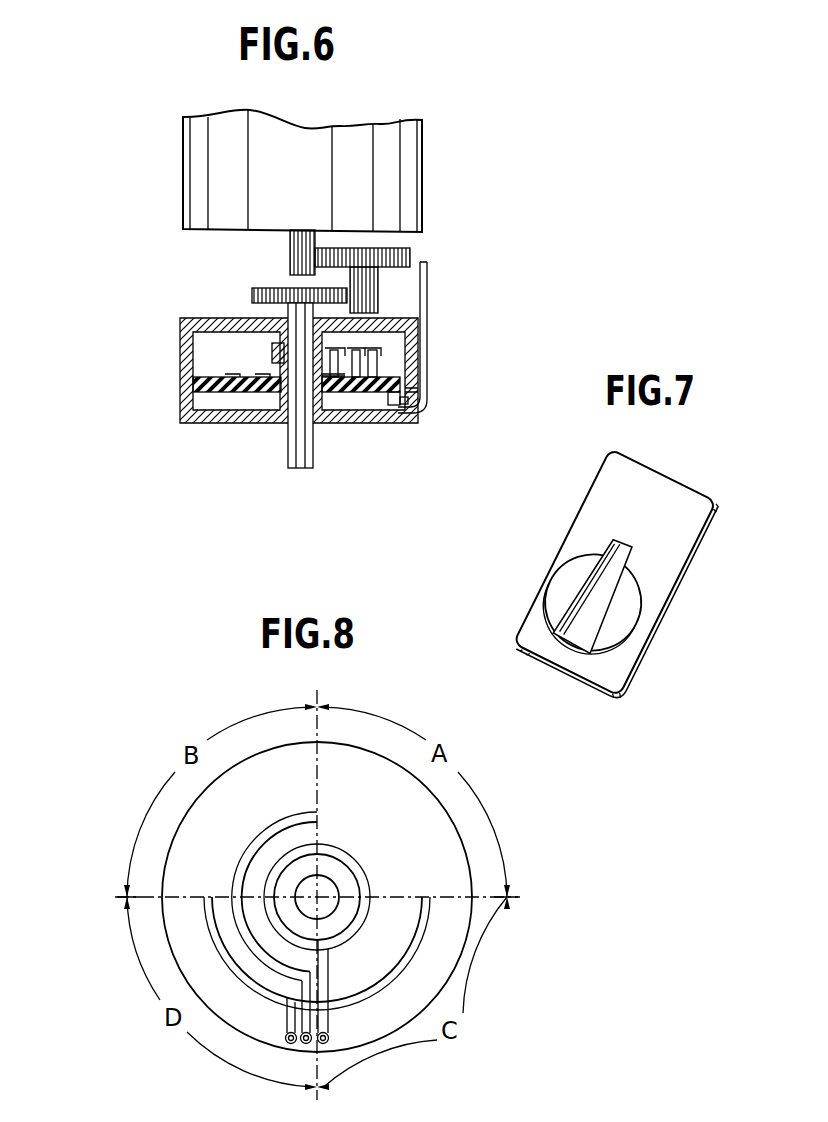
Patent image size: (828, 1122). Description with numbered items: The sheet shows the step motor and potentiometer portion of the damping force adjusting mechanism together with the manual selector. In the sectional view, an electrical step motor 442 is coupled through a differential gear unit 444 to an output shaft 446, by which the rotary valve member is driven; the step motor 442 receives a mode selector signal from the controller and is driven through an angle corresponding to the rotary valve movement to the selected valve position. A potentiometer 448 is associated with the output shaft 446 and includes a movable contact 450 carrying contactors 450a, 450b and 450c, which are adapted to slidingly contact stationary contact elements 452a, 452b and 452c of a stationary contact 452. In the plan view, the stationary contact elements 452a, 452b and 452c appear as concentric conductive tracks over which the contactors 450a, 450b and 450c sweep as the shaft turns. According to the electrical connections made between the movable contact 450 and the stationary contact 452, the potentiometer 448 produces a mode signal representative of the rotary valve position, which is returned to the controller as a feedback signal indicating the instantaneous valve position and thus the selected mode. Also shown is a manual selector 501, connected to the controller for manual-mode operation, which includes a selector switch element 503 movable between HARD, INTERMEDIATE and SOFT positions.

In FIG. 6, the electrical step motor 442 is at (424, 161).
In FIG. 6, the differential gear unit 444 is at (418, 240).
In FIG. 6, the output shaft 446 is at (256, 298).
In FIG. 6, the potentiometer 448 is at (395, 342).
In FIG. 6, the movable contact 450 is at (362, 350).
In FIG. 6, the contactor 450a is at (342, 393).
In FIG. 6, the contactor 450b is at (365, 393).
In FIG. 6, the contactor 450c is at (380, 358).
In FIG. 6, the stationary contact 452 is at (302, 393).
In FIG. 6, the stationary contact element 452a is at (330, 393).
In FIG. 8, the stationary contact element 452a is at (265, 888).
In FIG. 6, the stationary contact element 452b is at (348, 352).
In FIG. 8, the stationary contact element 452b is at (243, 908).
In FIG. 6, the stationary contact element 452c is at (427, 385).
In FIG. 8, the stationary contact element 452c is at (245, 988).
In FIG. 7, the manual selector 501 is at (550, 515).
In FIG. 7, the selector switch element 503 is at (610, 635).